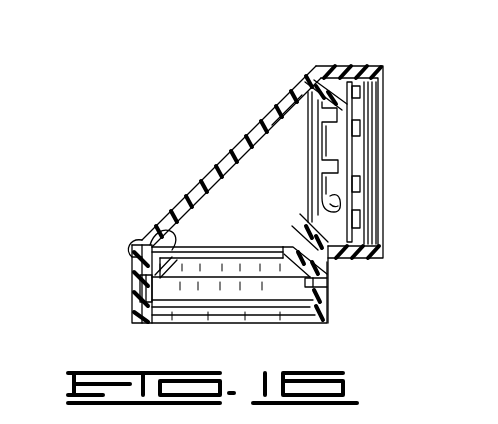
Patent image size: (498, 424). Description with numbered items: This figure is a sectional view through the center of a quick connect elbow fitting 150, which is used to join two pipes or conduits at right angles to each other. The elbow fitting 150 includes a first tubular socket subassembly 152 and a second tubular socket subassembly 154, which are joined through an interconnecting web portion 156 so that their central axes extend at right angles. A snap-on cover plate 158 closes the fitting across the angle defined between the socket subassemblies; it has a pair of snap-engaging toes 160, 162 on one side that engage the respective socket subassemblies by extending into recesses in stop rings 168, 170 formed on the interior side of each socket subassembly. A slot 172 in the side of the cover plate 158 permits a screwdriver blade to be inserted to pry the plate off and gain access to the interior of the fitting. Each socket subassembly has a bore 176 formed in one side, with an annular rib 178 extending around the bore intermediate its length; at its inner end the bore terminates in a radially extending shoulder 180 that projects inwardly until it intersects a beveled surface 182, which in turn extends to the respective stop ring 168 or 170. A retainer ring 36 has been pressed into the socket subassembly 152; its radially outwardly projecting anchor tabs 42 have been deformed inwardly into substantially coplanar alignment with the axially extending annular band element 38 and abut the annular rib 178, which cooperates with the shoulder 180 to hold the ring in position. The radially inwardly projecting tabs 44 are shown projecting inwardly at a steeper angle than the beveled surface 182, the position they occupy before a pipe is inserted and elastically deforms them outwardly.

The retainer ring 36 is at (342, 196).
The annular band element 38 is at (350, 142).
The anchor tabs 42 is at (362, 214).
The radially inwardly projecting tabs 44 is at (333, 143).
The elbow fitting 150 is at (350, 291).
The first tubular socket subassembly 152 is at (351, 64).
The second tubular socket subassembly 154 is at (132, 310).
The interconnecting web portion 156 is at (312, 244).
The snap-on cover plate 158 is at (245, 140).
The snap-engaging toe 160 is at (167, 210).
The snap-engaging toe 162 is at (293, 103).
The stop ring 168 is at (313, 232).
The stop ring 170 is at (270, 243).
The slot 172 is at (138, 250).
The bore 176 is at (387, 247).
The annular rib 178 is at (368, 146).
The shoulder 180 is at (338, 96).
The beveled surface 182 is at (300, 230).